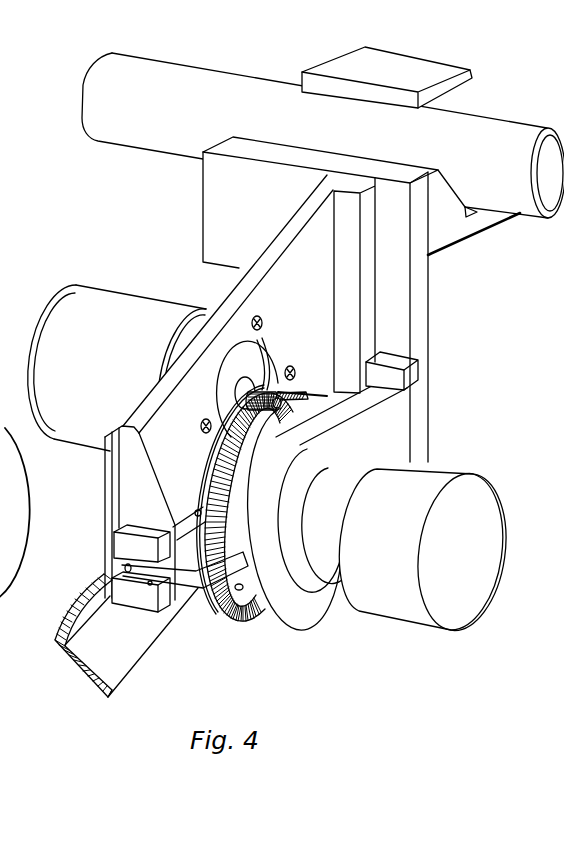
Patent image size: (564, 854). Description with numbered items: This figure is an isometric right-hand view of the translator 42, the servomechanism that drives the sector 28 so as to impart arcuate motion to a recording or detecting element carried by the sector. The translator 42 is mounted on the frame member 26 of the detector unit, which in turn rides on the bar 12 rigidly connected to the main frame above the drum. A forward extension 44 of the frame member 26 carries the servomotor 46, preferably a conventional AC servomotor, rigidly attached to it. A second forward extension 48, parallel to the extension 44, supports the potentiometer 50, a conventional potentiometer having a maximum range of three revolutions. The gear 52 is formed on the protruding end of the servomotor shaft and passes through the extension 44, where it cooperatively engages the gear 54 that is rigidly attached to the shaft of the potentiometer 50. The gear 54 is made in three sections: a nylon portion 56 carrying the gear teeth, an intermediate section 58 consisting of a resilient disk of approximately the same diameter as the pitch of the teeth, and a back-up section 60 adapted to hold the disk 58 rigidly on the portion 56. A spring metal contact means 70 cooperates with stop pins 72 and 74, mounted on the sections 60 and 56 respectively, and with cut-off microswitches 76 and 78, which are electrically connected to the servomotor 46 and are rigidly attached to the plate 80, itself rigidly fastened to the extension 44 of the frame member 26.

The bar 12 is at (482, 127).
The frame member 26 is at (342, 65).
The sector 28 is at (123, 662).
The translator 42 is at (488, 445).
The forward extension 44 is at (237, 295).
The servomotor 46 is at (143, 302).
The forward extension 48 is at (402, 413).
The potentiometer 50 is at (482, 517).
The gear 52 is at (268, 362).
The gear 54 is at (302, 435).
The nylon portion 56 is at (283, 620).
The intermediate section 58 is at (226, 614).
The back-up section 60 is at (213, 470).
The spring metal contact means 70 is at (203, 590).
The stop pin 72 is at (197, 511).
The stop pin 74 is at (242, 589).
The cut-off microswitch 76 is at (156, 535).
The cut-off microswitch 78 is at (140, 604).
The plate 80 is at (130, 475).